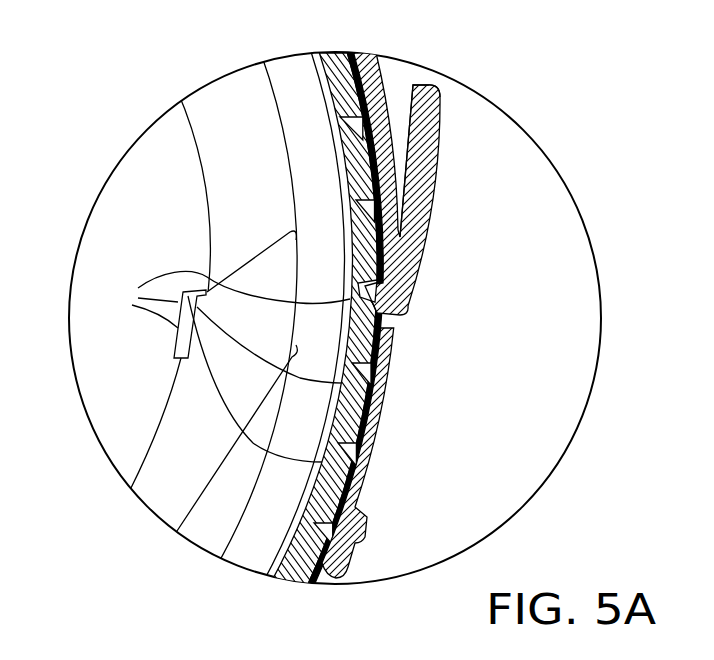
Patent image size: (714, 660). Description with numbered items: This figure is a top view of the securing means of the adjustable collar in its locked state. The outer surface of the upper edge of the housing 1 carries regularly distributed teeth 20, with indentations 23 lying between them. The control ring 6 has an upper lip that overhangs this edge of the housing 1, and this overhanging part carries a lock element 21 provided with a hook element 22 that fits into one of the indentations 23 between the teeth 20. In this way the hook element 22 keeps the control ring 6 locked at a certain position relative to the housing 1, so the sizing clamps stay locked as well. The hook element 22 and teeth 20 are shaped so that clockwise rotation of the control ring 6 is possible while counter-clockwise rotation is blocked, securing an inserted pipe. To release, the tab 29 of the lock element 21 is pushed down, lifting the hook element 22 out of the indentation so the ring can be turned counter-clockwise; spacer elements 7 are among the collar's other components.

The housing 1 is at (294, 120).
The control ring 6 is at (226, 175).
The spacer elements 7 is at (178, 457).
The teeth 20 is at (373, 250).
The lock element 21 is at (433, 207).
The hook element 22 is at (373, 287).
The indentations 23 is at (224, 381).
The tab 29 is at (440, 103).